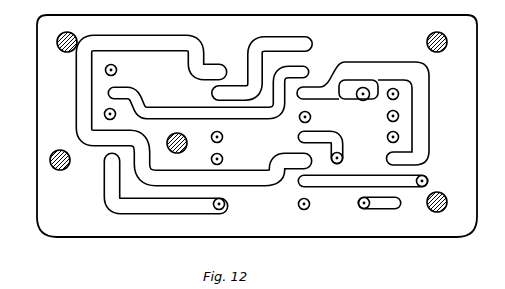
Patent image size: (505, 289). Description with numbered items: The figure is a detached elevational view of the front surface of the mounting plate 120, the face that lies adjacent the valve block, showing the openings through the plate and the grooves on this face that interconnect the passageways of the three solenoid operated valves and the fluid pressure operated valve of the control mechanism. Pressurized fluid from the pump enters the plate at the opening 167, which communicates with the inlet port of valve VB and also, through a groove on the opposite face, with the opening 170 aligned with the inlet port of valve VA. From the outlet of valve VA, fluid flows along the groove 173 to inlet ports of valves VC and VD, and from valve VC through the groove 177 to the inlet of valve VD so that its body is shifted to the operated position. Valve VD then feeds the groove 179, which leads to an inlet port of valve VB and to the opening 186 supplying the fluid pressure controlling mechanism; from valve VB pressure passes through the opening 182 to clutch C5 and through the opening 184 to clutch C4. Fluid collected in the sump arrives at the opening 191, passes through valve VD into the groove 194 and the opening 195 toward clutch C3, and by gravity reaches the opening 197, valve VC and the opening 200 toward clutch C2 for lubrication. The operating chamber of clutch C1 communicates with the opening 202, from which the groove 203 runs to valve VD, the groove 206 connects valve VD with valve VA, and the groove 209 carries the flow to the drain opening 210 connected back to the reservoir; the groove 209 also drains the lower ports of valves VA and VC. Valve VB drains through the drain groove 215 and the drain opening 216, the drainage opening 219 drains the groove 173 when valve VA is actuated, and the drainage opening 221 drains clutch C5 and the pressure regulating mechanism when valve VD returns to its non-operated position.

The mounting plate 120 is at (44, 73).
The opening 170 is at (105, 115).
The groove 173 is at (142, 89).
The groove 177 is at (241, 75).
The groove 179 is at (386, 50).
The opening 182 is at (399, 137).
The opening 184 is at (399, 94).
The opening 186 is at (368, 100).
The opening 191 is at (307, 209).
The groove 194 is at (350, 188).
The opening 195 is at (426, 176).
The opening 197 is at (222, 157).
The opening 200 is at (222, 135).
The opening 202 is at (343, 157).
The groove 203 is at (341, 132).
The groove 206 is at (252, 178).
The groove 209 is at (104, 185).
The opening 210 is at (224, 209).
The drain groove 215 is at (377, 209).
The drain opening 216 is at (365, 209).
The drainage opening 219 is at (115, 67).
The drainage opening 221 is at (314, 113).
The opening 167 is at (399, 116).